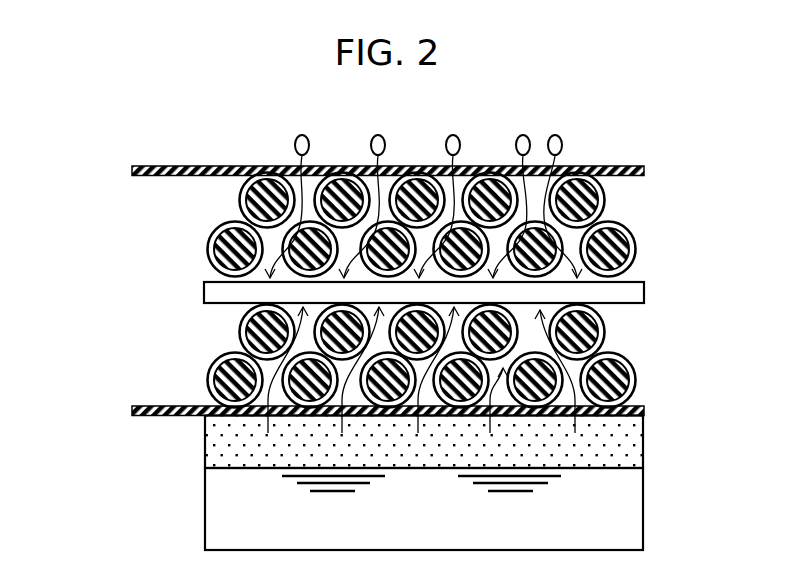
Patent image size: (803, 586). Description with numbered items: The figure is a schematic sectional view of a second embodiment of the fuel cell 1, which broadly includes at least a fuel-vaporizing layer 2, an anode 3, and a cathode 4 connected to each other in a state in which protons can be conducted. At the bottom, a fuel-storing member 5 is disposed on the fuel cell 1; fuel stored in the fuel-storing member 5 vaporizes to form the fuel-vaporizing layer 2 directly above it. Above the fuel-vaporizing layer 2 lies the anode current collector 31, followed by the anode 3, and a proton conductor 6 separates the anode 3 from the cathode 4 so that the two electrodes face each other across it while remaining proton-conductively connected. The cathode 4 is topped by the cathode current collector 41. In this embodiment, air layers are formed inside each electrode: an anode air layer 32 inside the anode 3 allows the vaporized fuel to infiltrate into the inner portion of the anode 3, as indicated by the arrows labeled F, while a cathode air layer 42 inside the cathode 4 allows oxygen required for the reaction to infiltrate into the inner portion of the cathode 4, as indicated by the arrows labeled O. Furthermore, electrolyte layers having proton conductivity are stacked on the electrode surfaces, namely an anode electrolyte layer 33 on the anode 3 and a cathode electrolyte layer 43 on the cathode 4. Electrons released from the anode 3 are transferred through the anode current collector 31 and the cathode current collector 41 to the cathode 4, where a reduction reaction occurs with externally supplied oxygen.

The fuel cell 1 is at (528, 105).
The fuel-vaporizing layer 2 is at (634, 436).
The anode 3 is at (406, 356).
The cathode 4 is at (407, 221).
The fuel-storing member 5 is at (634, 508).
The proton conductor 6 is at (635, 292).
The anode current collector 31 is at (132, 409).
The anode air layer 32 is at (193, 353).
The anode electrolyte layer 33 is at (208, 382).
The cathode current collector 41 is at (132, 170).
The cathode air layer 42 is at (193, 213).
The cathode electrolyte layer 43 is at (208, 248).